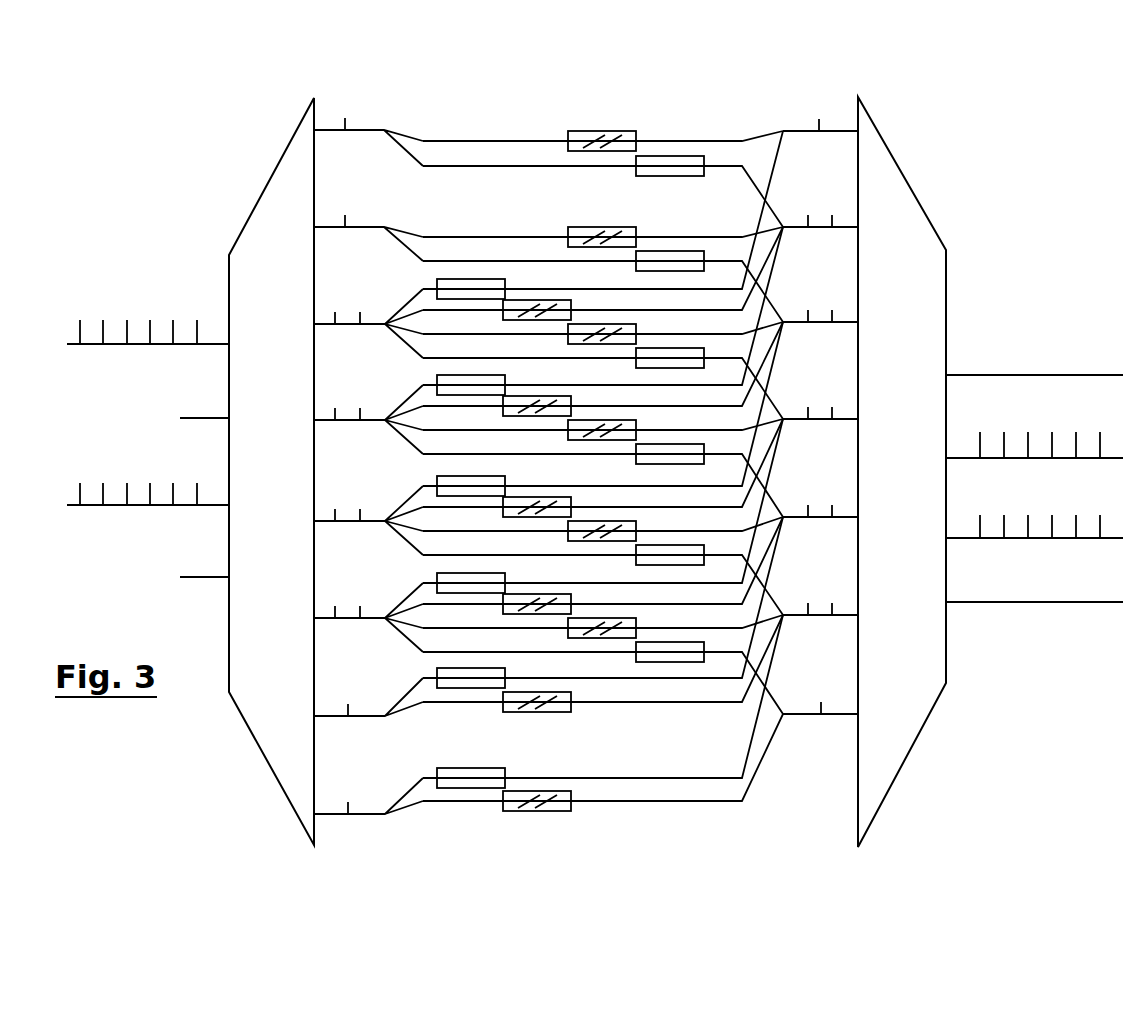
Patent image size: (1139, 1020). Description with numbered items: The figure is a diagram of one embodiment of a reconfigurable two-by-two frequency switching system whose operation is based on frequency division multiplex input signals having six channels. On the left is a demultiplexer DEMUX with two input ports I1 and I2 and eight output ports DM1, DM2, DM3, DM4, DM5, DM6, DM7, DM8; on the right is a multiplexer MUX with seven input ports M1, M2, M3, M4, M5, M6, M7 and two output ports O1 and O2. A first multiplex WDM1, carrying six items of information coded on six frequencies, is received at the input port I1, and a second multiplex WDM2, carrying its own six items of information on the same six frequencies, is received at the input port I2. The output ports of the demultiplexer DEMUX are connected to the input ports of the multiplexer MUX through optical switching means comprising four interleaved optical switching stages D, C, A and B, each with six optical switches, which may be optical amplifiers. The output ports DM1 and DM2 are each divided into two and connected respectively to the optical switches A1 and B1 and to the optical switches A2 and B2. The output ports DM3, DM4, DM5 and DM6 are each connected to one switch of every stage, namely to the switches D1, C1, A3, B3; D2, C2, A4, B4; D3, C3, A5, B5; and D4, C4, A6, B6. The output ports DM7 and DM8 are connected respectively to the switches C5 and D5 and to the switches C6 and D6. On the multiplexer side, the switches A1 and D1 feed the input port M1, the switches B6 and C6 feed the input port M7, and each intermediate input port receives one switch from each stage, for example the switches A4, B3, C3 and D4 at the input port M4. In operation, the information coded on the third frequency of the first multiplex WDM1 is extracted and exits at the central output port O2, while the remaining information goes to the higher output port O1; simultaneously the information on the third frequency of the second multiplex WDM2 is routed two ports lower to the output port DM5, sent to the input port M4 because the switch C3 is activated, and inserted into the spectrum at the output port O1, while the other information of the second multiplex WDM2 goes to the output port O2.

The demultiplexer DEMUX is at (268, 762).
The multiplexer MUX is at (925, 722).
The first input port I1 is at (229, 505).
The second input port I2 is at (229, 344).
The first output port O1 is at (946, 458).
The second output port O2 is at (946, 538).
The first input frequency division multiplex WDM1 is at (140, 535).
The second multiplex WDM2 is at (147, 274).
The output port of the demultiplexer DM1 is at (314, 130).
The output port of the demultiplexer DM2 is at (314, 227).
The output port of the demultiplexer DM3 is at (314, 324).
The output port of the demultiplexer DM4 is at (314, 420).
The output port of the demultiplexer DM5 is at (314, 521).
The output port of the demultiplexer DM6 is at (314, 618).
The output port of the demultiplexer DM7 is at (314, 716).
The output port of the demultiplexer DM8 is at (314, 814).
The input port of the multiplexer M1 is at (858, 131).
The input port of the multiplexer M2 is at (858, 227).
The input port of the multiplexer M3 is at (858, 322).
The input port of the multiplexer M4 is at (858, 419).
The input port of the multiplexer M5 is at (858, 517).
The input port of the multiplexer M6 is at (858, 615).
The input port of the multiplexer M7 is at (858, 714).
The optical switching stage A is at (597, 90).
The optical switching stage B is at (641, 90).
The optical switching stage C is at (553, 90).
The optical switching stage D is at (505, 90).
The optical switch A1 is at (583, 131).
The optical switch A2 is at (585, 227).
The optical switch A3 is at (605, 324).
The optical switch A4 is at (605, 420).
The optical switch A5 is at (605, 521).
The optical switch A6 is at (605, 618).
The optical switch B1 is at (667, 176).
The optical switch B2 is at (665, 251).
The optical switch B3 is at (646, 368).
The optical switch B4 is at (646, 464).
The optical switch B5 is at (646, 565).
The optical switch B6 is at (646, 662).
The optical switch C1 is at (563, 300).
The optical switch C2 is at (563, 396).
The optical switch C3 is at (563, 497).
The optical switch C4 is at (563, 594).
The optical switch C5 is at (556, 712).
The optical switch C6 is at (556, 811).
The optical switch D1 is at (448, 279).
The optical switch D2 is at (448, 375).
The optical switch D3 is at (448, 476).
The optical switch D4 is at (448, 573).
The optical switch D5 is at (448, 668).
The optical switch D6 is at (462, 768).